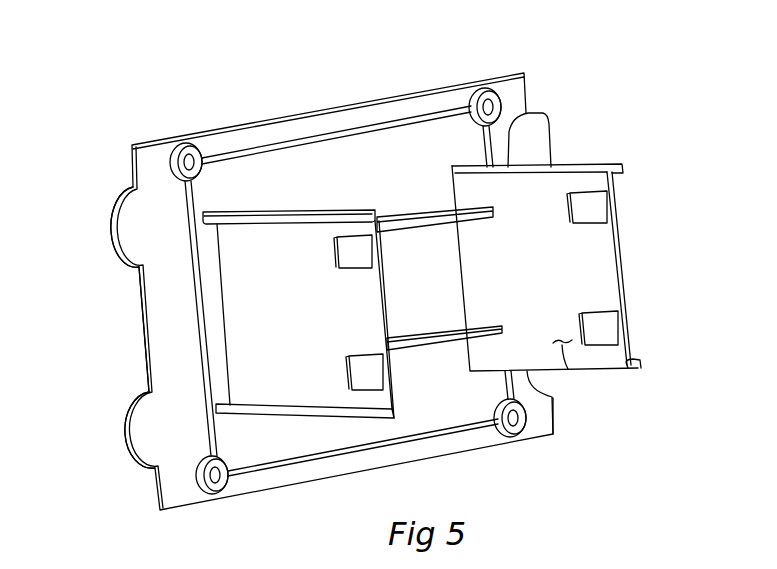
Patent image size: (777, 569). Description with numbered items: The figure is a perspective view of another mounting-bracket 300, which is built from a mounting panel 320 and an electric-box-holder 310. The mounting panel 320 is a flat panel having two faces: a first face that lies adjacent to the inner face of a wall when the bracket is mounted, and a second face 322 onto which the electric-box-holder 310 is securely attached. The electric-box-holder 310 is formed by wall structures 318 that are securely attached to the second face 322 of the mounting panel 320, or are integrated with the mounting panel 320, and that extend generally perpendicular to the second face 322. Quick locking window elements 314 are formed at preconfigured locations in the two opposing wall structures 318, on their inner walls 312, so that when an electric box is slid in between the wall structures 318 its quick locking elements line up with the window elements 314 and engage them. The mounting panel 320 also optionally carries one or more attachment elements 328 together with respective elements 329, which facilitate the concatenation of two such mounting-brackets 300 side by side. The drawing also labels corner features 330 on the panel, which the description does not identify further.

The mounting-bracket 300 is at (381, 296).
The electric-box-holder 310 is at (608, 161).
The inner wall 312 is at (570, 370).
The quick locking window element 314 is at (598, 205).
The wall structure 318 is at (618, 256).
The mounting panel 320 is at (297, 110).
The second face 322 is at (172, 330).
The attachment element 328 is at (548, 112).
The respective element 329 is at (133, 203).
The corner bosses 330 is at (484, 110).